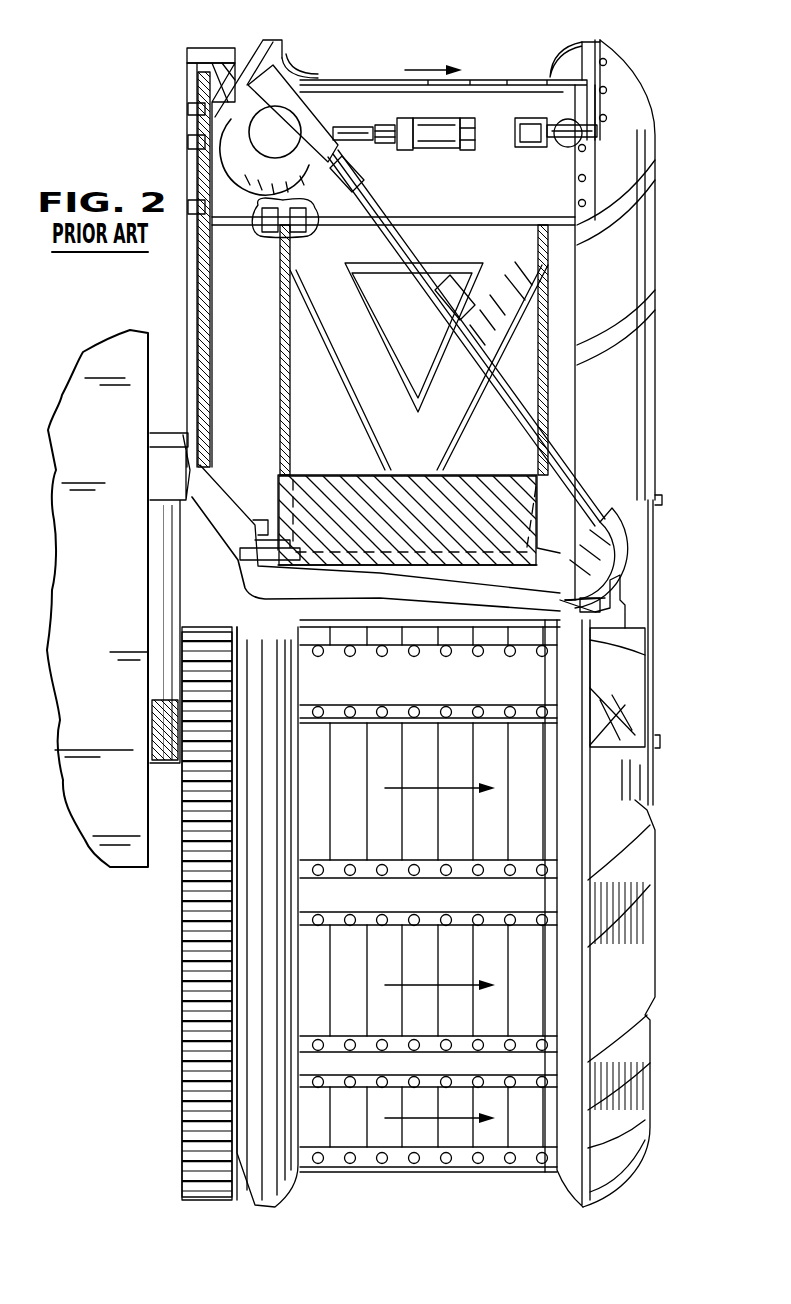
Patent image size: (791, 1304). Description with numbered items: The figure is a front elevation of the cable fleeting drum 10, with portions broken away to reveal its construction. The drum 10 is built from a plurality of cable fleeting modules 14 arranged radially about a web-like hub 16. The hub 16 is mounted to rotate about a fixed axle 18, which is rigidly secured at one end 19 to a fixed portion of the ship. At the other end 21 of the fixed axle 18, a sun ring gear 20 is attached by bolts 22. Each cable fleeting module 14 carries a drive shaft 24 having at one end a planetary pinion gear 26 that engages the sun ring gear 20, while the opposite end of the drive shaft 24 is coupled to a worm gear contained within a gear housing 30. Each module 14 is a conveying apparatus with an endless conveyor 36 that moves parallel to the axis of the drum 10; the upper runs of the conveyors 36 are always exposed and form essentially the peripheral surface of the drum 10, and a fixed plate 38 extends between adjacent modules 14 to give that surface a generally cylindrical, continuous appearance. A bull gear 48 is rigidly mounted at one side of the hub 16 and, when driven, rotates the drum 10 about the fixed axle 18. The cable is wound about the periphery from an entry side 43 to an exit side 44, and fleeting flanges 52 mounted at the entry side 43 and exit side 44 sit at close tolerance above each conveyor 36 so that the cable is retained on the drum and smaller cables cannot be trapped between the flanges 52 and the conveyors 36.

The cable fleeting drum 10 is at (120, 102).
The cable fleeting module 14 is at (632, 50).
The hub 16 is at (522, 252).
The fixed axle 18 is at (240, 520).
The end of fixed axle 19 is at (187, 435).
The sun ring gear 20 is at (612, 569).
The other end of fixed axle 21 is at (627, 650).
The bolts 22 is at (600, 605).
The drive shaft 24 is at (530, 427).
The planetary pinion gear 26 is at (647, 533).
The gear housing 30 is at (238, 130).
The endless conveyor 36 is at (479, 62).
The fixed plate 38 is at (550, 675).
The entry side 43 is at (315, 57).
The exit side 44 is at (550, 60).
The bull gear 48 is at (190, 69).
The fleeting flanges 52 is at (288, 46).